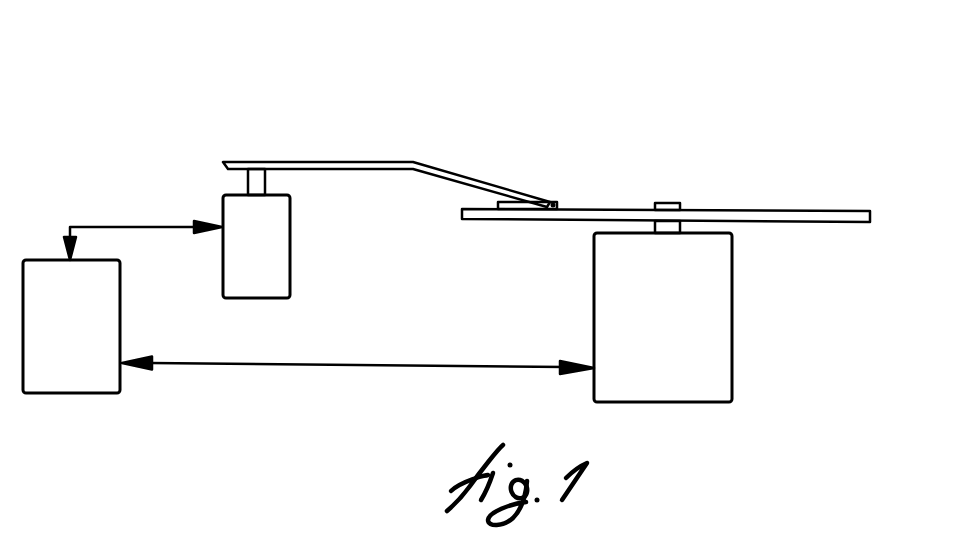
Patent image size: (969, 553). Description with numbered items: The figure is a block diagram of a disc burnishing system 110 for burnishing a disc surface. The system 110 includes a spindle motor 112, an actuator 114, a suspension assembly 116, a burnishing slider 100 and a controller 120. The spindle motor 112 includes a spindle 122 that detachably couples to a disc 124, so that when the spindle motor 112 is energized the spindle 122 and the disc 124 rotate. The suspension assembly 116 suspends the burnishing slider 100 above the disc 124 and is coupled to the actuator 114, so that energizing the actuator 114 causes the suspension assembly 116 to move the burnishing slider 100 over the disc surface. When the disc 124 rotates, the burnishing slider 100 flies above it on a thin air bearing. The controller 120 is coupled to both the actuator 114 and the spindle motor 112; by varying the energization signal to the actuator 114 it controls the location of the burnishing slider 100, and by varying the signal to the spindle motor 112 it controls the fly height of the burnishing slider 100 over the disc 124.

The disc burnishing system 110 is at (556, 106).
The burnishing slider 100 is at (553, 204).
The spindle motor 112 is at (732, 323).
The actuator 114 is at (290, 245).
The suspension assembly 116 is at (307, 162).
The controller 120 is at (90, 343).
The spindle 122 is at (663, 204).
The disc 124 is at (782, 211).